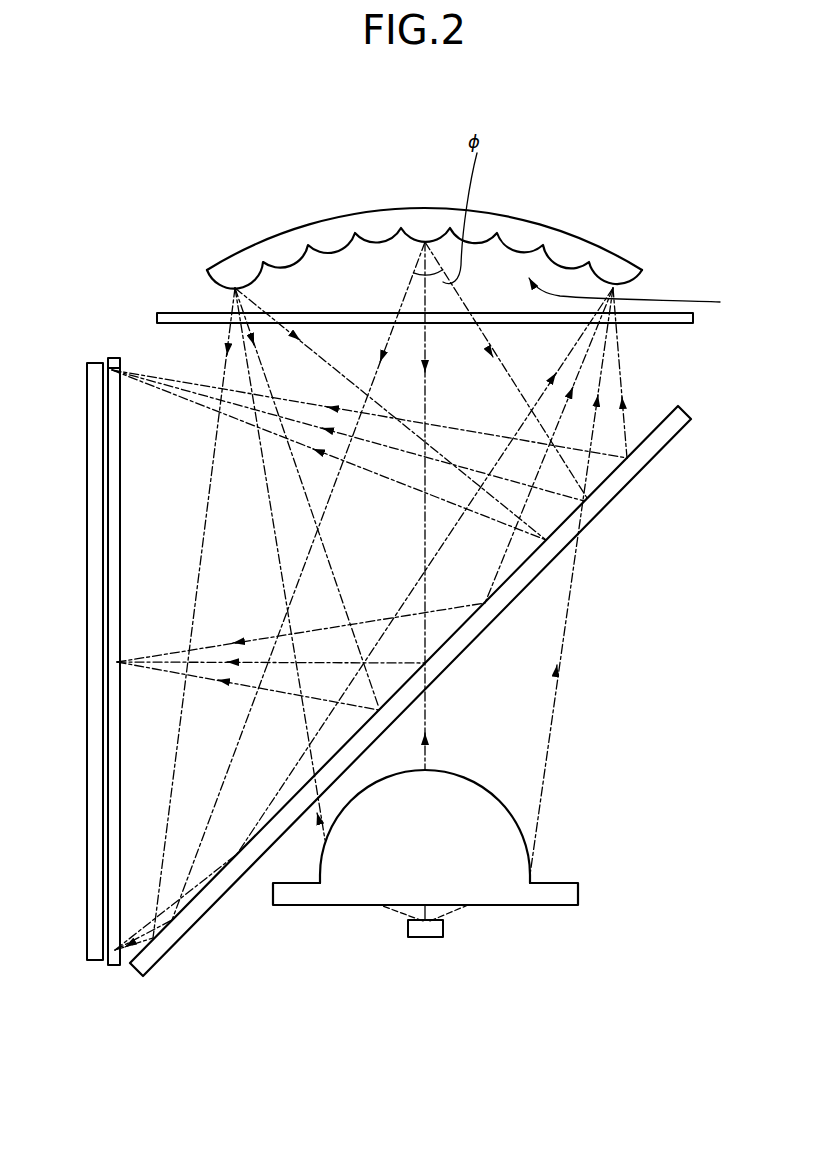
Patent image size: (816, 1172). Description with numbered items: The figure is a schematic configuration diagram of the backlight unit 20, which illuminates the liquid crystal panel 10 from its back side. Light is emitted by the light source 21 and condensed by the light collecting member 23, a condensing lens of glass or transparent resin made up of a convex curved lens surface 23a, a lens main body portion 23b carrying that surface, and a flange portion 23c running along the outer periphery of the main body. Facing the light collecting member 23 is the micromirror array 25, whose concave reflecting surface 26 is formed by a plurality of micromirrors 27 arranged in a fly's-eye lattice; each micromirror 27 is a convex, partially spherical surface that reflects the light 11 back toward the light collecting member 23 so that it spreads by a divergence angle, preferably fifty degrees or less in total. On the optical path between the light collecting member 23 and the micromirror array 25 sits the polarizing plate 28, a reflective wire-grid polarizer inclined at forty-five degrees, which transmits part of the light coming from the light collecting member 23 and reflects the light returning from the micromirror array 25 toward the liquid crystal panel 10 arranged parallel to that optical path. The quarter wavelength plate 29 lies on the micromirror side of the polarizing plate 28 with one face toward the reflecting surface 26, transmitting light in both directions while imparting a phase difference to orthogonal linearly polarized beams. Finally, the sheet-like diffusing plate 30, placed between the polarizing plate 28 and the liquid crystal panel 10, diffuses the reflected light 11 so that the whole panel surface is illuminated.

The backlight unit 20 is at (612, 147).
The micromirror array 25 is at (619, 240).
The micromirror 27 is at (643, 283).
The reflecting surface 26 is at (639, 295).
The quarter wavelength plate 29 is at (693, 318).
The liquid crystal panel 10 is at (92, 358).
The diffusing plate 30 is at (114, 354).
The polarizing plate 28 is at (667, 450).
The light 11 is at (567, 610).
The light collecting member 23 is at (547, 912).
The lens surface 23a is at (462, 781).
The lens main body portion 23b is at (502, 873).
The flange portion 23c is at (560, 883).
The light source 21 is at (425, 944).